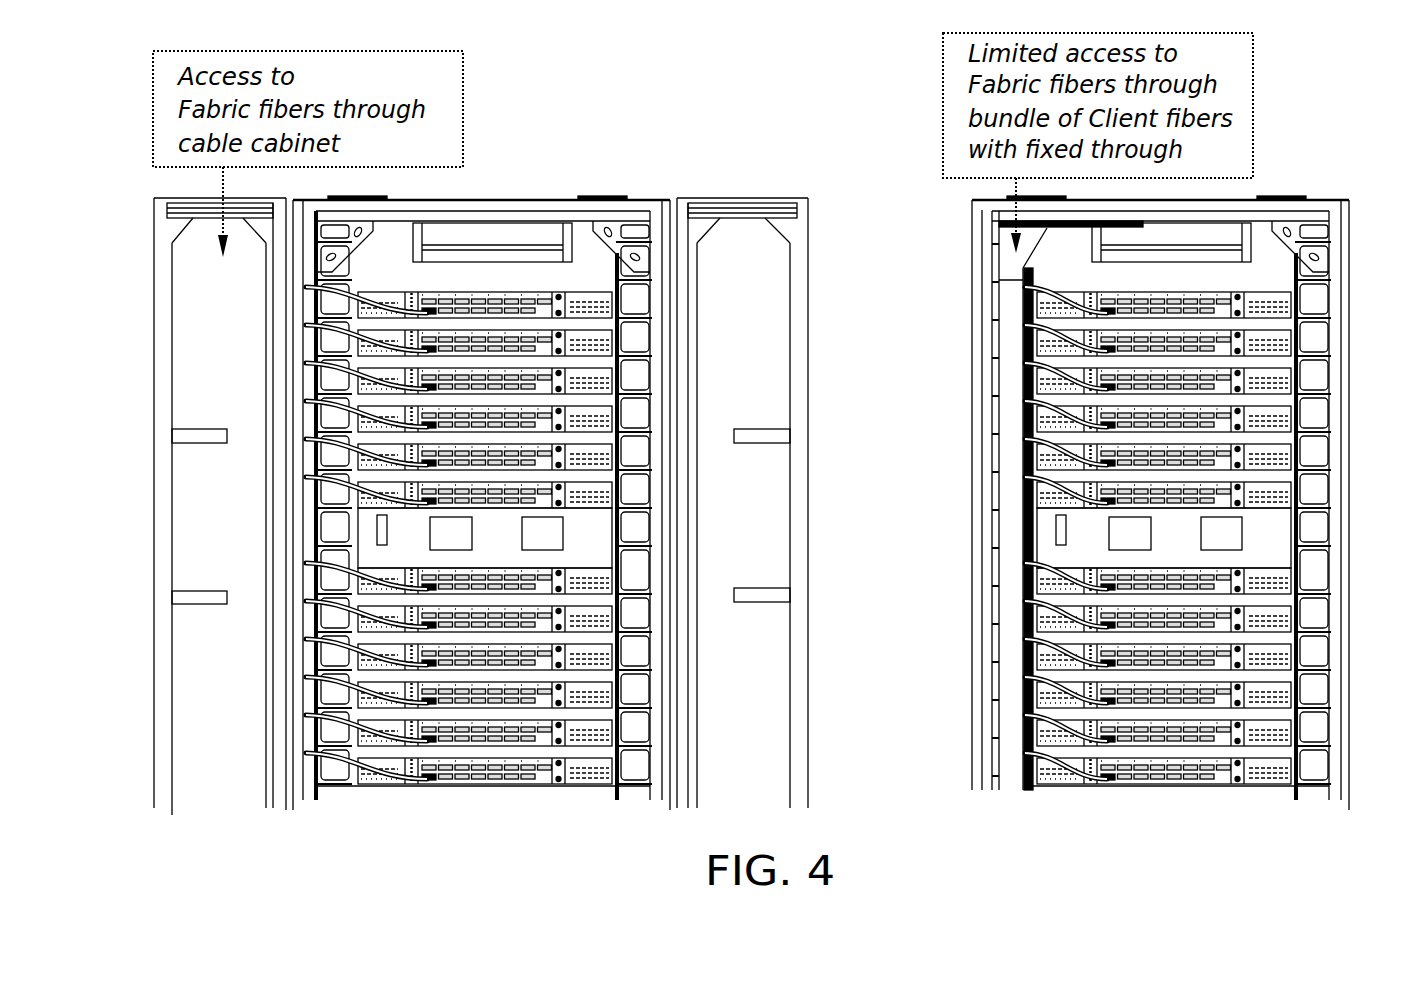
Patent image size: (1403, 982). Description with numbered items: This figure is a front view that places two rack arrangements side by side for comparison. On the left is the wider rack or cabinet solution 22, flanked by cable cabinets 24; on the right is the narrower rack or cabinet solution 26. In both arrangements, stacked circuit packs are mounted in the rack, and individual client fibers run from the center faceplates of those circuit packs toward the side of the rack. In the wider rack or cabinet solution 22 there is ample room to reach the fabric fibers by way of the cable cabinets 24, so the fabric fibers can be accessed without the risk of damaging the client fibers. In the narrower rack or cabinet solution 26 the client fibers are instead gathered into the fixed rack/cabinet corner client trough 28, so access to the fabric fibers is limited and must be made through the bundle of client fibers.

The wider rack or cabinet solution 22 is at (491, 807).
The cable cabinets 24 is at (237, 804).
The narrower rack or cabinet solution 26 is at (1203, 799).
The fixed rack/cabinet corner client trough 28 is at (1016, 792).